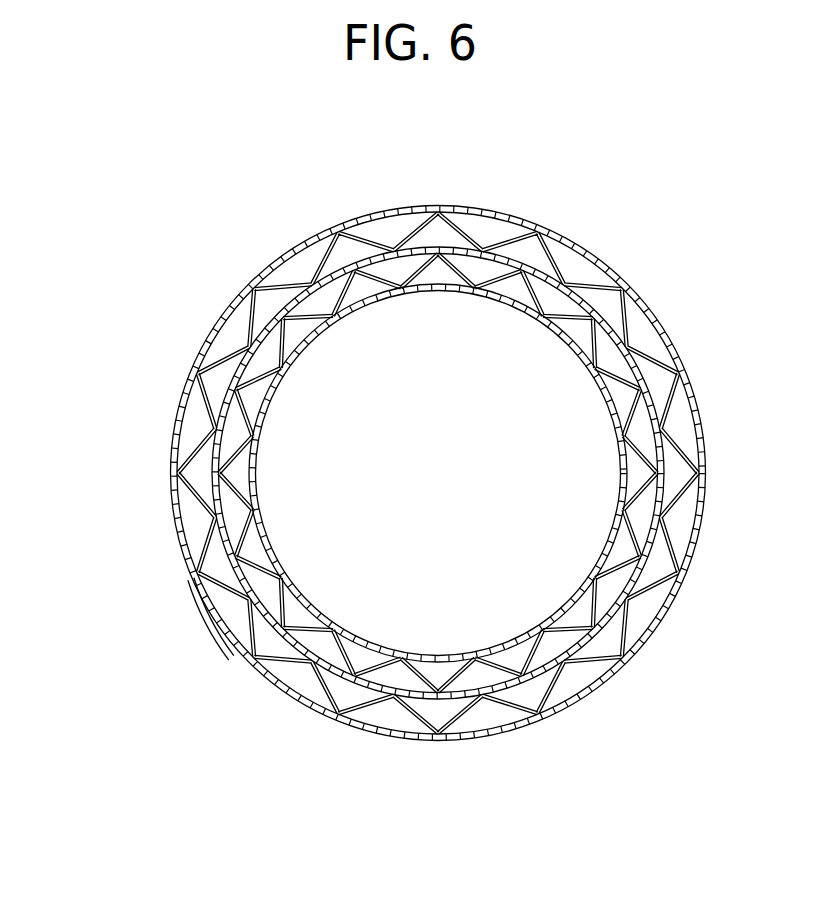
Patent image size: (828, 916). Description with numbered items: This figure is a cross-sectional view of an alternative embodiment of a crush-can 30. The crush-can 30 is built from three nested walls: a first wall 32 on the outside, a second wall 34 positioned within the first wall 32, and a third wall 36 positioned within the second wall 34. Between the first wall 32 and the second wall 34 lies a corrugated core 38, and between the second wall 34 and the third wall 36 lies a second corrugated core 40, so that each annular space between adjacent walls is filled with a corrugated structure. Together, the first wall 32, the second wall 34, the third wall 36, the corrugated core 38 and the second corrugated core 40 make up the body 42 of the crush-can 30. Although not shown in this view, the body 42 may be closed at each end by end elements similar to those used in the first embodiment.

The crush-can 30 is at (191, 257).
The first wall 32 is at (480, 207).
The second wall 34 is at (212, 488).
The third wall 36 is at (272, 548).
The corrugated core 38 is at (222, 360).
The second corrugated core 40 is at (297, 630).
The body 42 is at (212, 615).